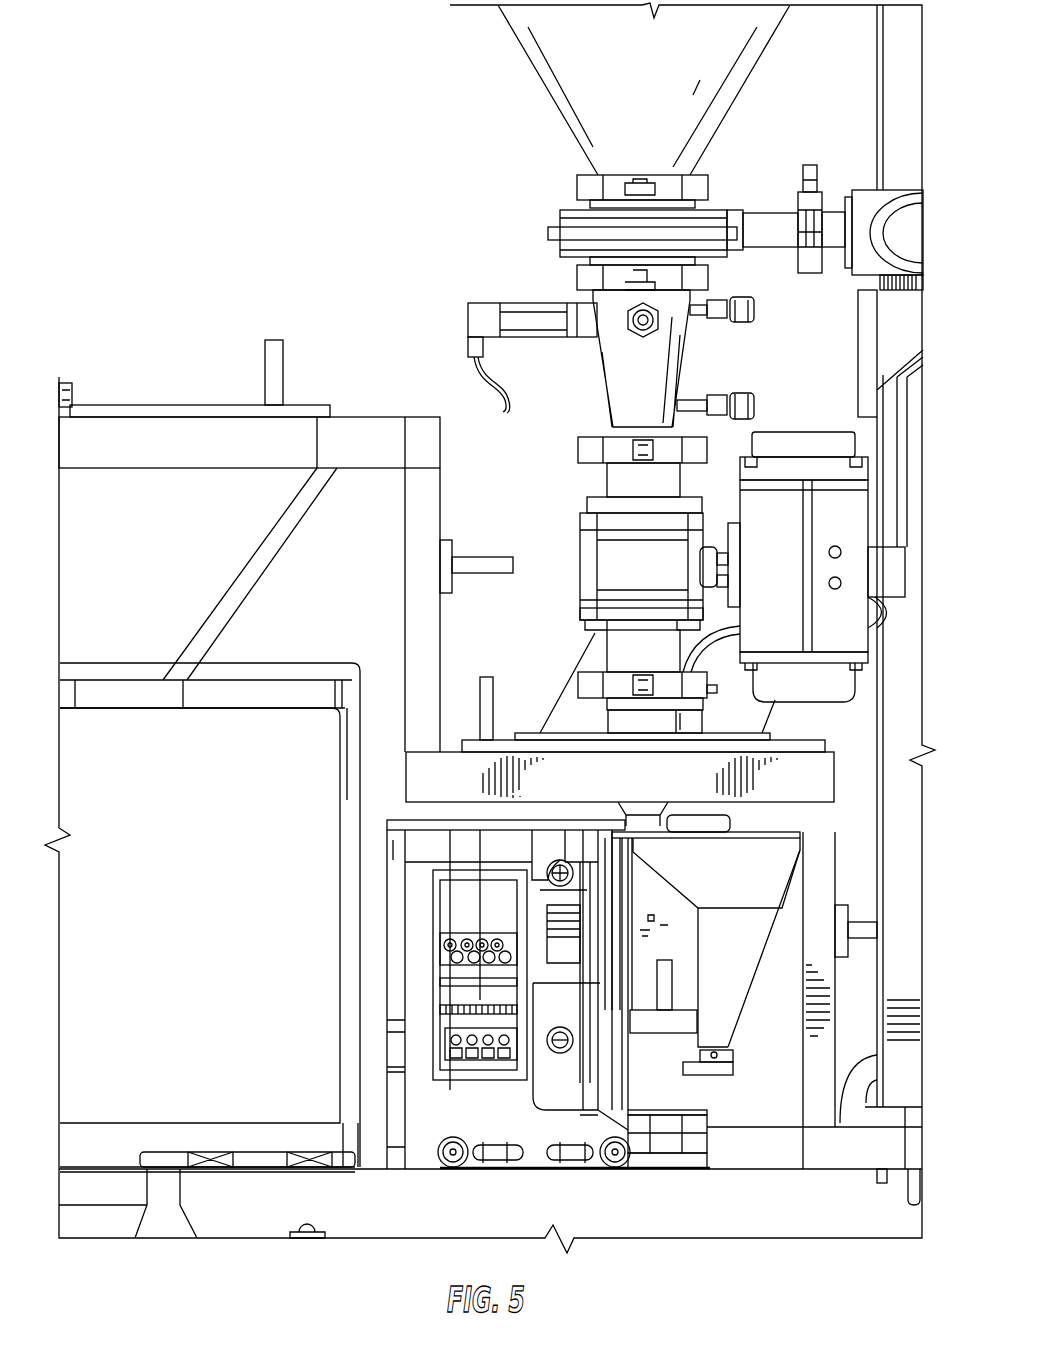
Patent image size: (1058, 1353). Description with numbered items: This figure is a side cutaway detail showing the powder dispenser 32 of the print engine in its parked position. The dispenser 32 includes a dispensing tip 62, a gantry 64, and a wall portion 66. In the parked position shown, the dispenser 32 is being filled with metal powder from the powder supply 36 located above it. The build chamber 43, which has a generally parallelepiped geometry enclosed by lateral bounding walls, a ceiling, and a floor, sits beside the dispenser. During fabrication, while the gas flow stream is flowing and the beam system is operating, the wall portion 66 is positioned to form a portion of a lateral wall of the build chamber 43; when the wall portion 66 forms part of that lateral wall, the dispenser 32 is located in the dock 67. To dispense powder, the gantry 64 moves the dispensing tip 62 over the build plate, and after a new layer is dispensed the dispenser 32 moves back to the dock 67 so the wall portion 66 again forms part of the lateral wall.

The powder supply 36 is at (593, 107).
The build chamber 43 is at (283, 782).
The powder dispenser 32 is at (750, 885).
The dock 67 is at (752, 1033).
The wall portion 66 is at (400, 982).
The gantry 64 is at (540, 1130).
The dispensing tip 62 is at (714, 1067).